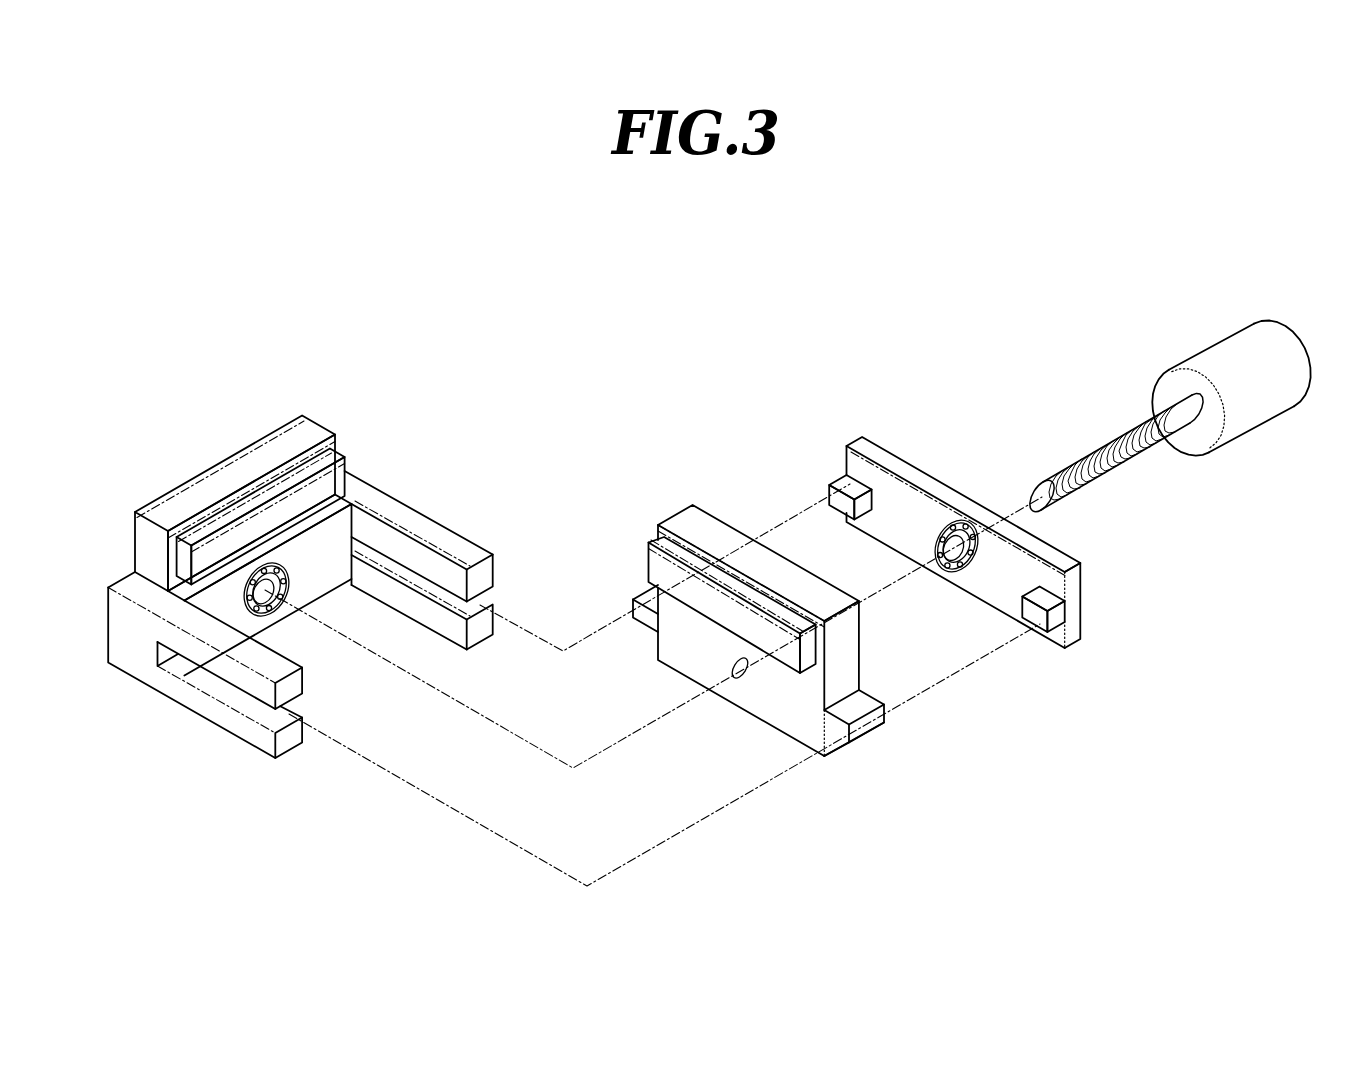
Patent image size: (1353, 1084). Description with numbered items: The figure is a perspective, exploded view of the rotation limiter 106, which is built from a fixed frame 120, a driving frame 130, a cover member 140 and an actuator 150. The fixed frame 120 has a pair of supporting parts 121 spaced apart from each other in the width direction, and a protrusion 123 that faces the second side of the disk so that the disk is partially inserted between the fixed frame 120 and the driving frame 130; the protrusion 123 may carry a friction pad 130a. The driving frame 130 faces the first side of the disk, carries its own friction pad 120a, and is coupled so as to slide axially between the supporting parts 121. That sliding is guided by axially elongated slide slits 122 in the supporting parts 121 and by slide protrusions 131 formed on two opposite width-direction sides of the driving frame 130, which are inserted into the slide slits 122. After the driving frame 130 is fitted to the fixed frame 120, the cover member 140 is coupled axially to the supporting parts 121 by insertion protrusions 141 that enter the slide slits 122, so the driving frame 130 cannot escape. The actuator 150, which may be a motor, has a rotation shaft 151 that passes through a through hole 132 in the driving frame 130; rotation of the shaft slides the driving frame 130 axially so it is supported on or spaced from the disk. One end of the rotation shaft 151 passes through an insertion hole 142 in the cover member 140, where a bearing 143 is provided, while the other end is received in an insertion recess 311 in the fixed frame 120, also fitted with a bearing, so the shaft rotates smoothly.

The rotation limiter 106 is at (168, 322).
The fixed frame 120 is at (216, 437).
The friction pad 120a is at (280, 487).
The supporting parts 121 is at (407, 520).
The slide slits 122 is at (218, 680).
The protrusion 123 is at (183, 503).
The driving frame 130 is at (668, 492).
The friction pad 130a is at (710, 600).
The slide protrusions 131 is at (874, 734).
The through hole 132 is at (741, 678).
The cover member 140 is at (883, 424).
The insertion protrusions 141 is at (1036, 625).
The insertion hole 142 is at (957, 522).
The bearing 143 is at (926, 533).
The actuator 150 is at (1199, 328).
The rotation shaft 151 is at (1113, 450).
The insertion recess 311 is at (248, 598).